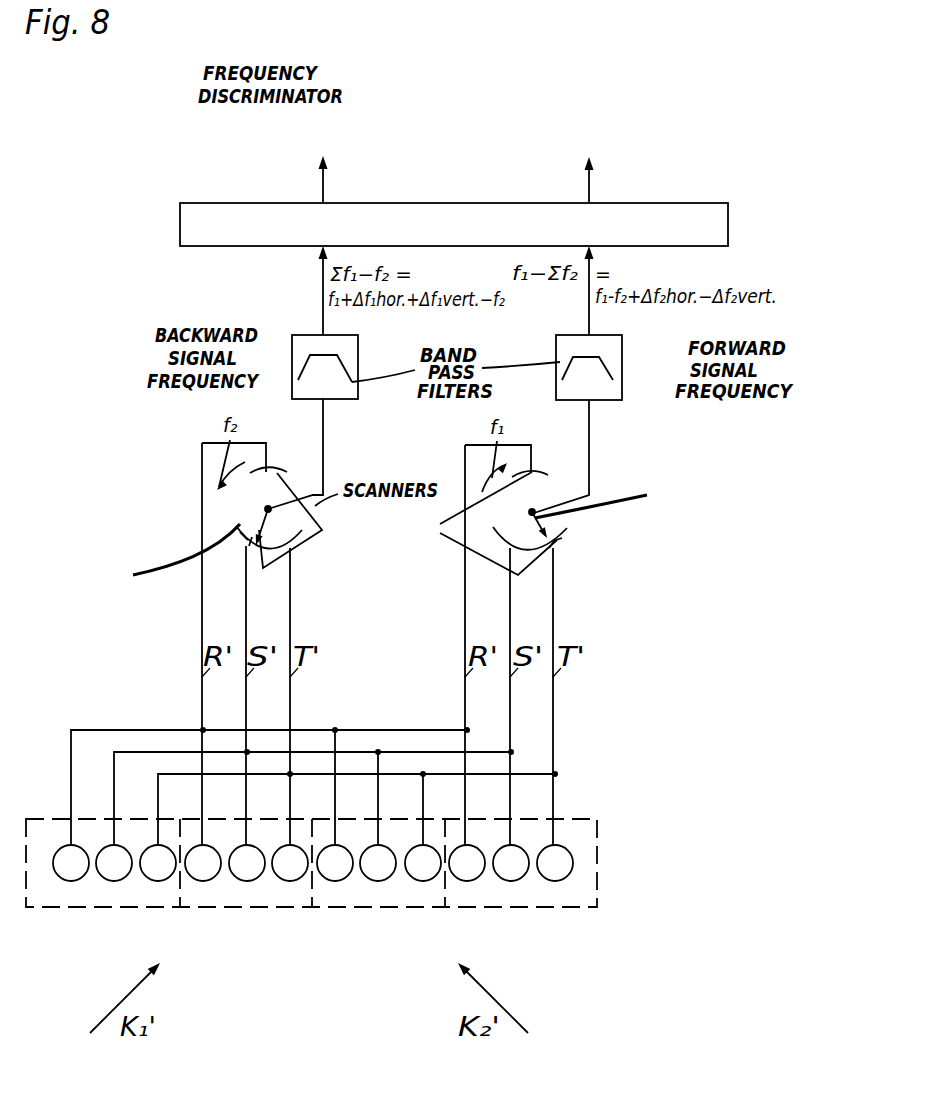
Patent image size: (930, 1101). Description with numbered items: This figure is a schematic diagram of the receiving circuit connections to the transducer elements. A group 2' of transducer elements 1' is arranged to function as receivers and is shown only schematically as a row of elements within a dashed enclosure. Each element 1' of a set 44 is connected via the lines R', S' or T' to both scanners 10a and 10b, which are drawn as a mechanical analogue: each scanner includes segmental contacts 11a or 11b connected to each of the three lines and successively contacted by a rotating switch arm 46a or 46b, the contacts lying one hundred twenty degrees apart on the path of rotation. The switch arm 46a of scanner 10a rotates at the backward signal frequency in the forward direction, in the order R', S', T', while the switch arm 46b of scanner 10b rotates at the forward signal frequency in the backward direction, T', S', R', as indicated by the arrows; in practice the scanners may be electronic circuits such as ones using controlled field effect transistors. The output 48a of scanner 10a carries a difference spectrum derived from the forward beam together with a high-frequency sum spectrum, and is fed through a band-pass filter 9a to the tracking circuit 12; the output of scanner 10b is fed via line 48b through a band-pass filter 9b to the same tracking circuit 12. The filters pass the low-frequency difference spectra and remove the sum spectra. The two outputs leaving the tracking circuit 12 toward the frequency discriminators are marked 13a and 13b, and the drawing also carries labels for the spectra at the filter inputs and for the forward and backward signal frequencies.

The frequency discriminator output (backward) 13a is at (321, 108).
The frequency discriminator output (forward) 13b is at (588, 161).
The tracking circuit 12 is at (656, 235).
The band-pass filter 9a is at (353, 365).
The band-pass filter 9b is at (617, 363).
The output of scanner 10a 48a is at (323, 446).
The line 48b is at (589, 452).
The rotating switch arm 46a is at (182, 557).
The rotating switch arm 46b is at (615, 499).
The scanner 10a is at (243, 500).
The scanner 10b is at (553, 521).
The segmental contacts 11a is at (275, 550).
The segmental contacts 11b is at (483, 523).
The set 44 is at (228, 897).
The transducer elements 1' is at (313, 903).
The group of transducer elements 2' is at (338, 863).